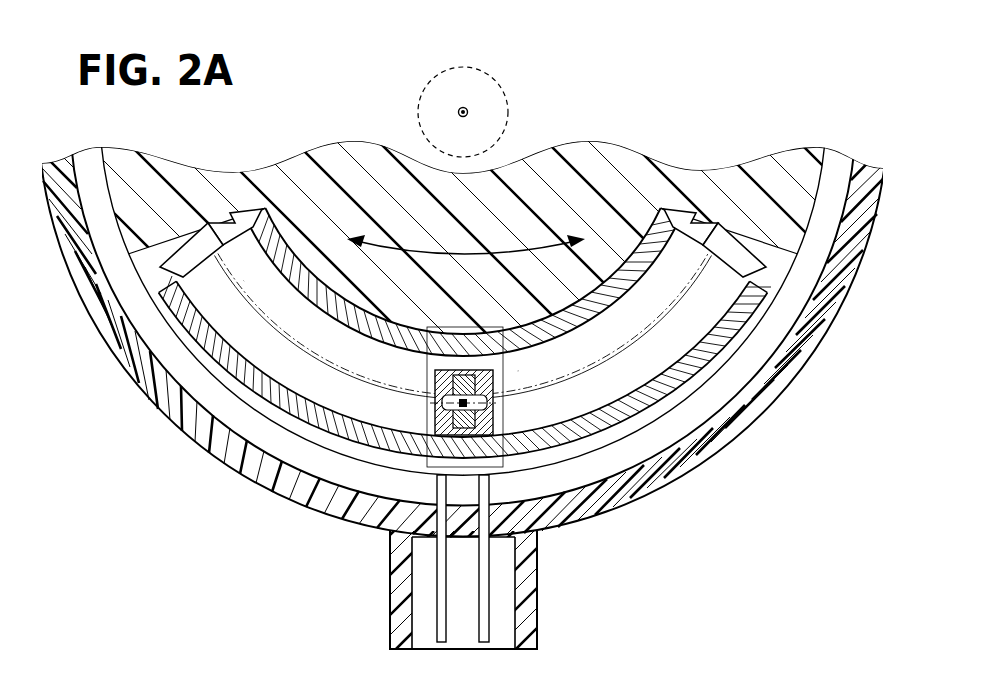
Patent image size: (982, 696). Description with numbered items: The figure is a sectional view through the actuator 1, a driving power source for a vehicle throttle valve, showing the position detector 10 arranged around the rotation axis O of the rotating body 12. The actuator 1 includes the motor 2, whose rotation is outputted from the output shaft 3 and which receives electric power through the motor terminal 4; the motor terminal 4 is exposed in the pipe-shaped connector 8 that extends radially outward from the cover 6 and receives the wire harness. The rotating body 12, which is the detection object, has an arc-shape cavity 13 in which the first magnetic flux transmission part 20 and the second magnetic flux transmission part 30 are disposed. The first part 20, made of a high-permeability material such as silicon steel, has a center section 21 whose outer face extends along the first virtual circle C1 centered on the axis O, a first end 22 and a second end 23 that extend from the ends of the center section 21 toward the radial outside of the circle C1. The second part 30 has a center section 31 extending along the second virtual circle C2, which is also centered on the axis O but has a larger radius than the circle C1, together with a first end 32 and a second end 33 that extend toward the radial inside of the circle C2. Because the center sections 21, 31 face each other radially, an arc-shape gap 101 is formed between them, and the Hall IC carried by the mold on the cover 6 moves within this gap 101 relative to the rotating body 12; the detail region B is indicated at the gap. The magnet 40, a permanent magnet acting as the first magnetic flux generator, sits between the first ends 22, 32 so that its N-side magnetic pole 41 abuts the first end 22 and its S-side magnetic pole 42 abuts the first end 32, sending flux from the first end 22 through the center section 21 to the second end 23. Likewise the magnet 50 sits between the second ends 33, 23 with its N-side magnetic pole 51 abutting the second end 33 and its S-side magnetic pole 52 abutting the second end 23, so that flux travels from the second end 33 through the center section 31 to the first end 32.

The actuator 1 is at (344, 108).
The motor 2 is at (373, 483).
The output shaft 3 is at (508, 93).
The motor terminal 4 is at (484, 645).
The cover 6 is at (240, 460).
The connector 8 is at (393, 604).
The position detector 10 is at (630, 578).
The rotating body 12 is at (327, 443).
The arc-shape cavity 13 is at (300, 420).
The first magnetic flux transmission part 20 is at (316, 305).
The center section 21 is at (612, 310).
The first end 22 is at (250, 238).
The second end 23 is at (690, 240).
The second magnetic flux transmission part 30 is at (337, 413).
The center section 31 is at (647, 380).
The first end 32 is at (200, 278).
The second end 33 is at (730, 270).
The magnet 40 is at (214, 217).
The magnetic pole 41 is at (239, 205).
The magnetic pole 42 is at (192, 217).
The magnet 50 is at (715, 216).
The magnetic pole 51 is at (738, 216).
The magnetic pole 52 is at (686, 203).
The arc-shape gap 101 is at (267, 357).
The sensor unit B is at (505, 363).
The first virtual circle C1 is at (686, 262).
The second virtual circle C2 is at (788, 118).
The rotation axis O is at (458, 112).